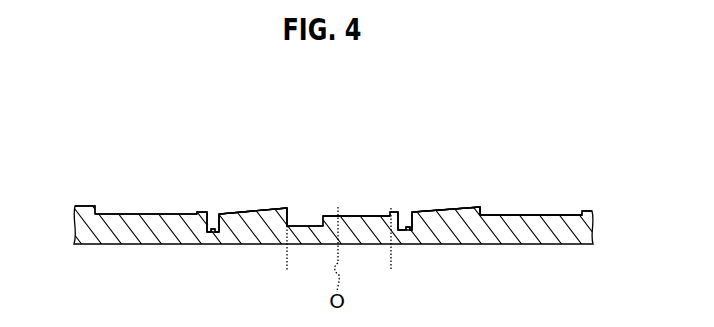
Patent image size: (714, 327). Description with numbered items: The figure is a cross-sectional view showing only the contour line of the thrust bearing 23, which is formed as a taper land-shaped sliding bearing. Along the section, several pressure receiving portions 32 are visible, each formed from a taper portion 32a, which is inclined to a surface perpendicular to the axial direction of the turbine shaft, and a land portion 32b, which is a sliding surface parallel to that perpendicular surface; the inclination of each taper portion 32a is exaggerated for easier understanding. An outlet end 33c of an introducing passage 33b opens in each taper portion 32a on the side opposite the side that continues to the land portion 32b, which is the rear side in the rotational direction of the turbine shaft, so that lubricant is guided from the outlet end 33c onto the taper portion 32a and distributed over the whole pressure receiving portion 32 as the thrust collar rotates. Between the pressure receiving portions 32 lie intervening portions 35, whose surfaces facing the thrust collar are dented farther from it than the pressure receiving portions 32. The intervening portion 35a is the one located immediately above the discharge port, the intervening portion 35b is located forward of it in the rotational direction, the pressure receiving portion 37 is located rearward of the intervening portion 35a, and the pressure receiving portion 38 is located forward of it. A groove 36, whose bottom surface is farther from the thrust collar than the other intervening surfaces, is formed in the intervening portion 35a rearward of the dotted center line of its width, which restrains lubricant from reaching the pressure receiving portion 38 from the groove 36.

The thrust bearing 23 is at (593, 213).
The pressure receiving portion 32 is at (183, 137).
The pressure receiving portion 37 is at (183, 137).
The pressure receiving portion 38 is at (470, 137).
The taper portion 32a is at (250, 211).
The land portion 32b is at (87, 206).
The introducing passage 33b is at (212, 230).
The outlet end 33c is at (212, 224).
The intervening portion 35 is at (122, 214).
The intervening portion 35a is at (370, 216).
The intervening portion 35b is at (574, 215).
The groove 36 is at (311, 226).